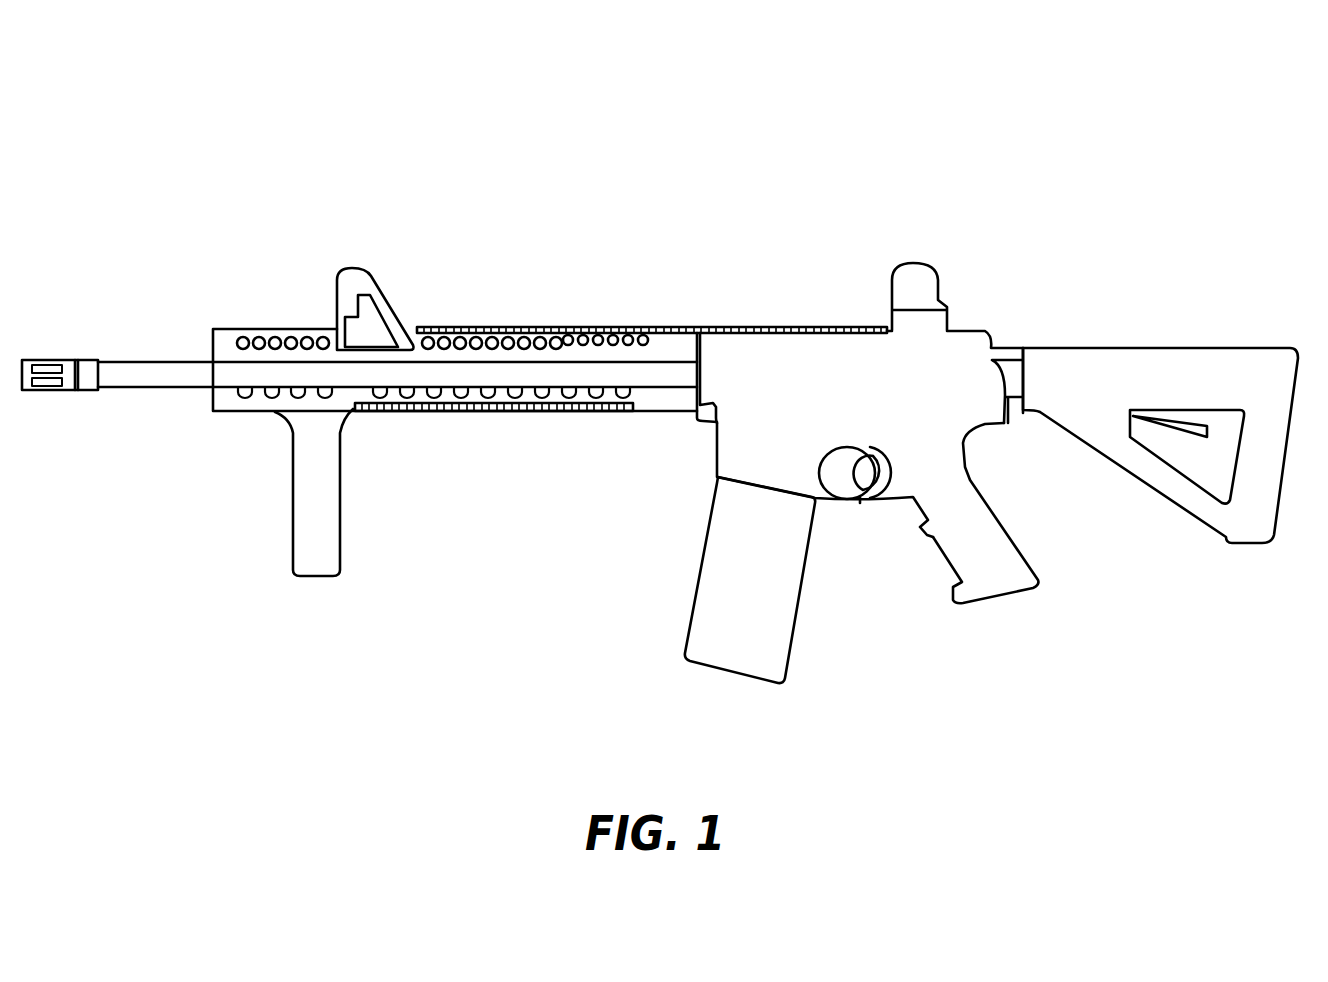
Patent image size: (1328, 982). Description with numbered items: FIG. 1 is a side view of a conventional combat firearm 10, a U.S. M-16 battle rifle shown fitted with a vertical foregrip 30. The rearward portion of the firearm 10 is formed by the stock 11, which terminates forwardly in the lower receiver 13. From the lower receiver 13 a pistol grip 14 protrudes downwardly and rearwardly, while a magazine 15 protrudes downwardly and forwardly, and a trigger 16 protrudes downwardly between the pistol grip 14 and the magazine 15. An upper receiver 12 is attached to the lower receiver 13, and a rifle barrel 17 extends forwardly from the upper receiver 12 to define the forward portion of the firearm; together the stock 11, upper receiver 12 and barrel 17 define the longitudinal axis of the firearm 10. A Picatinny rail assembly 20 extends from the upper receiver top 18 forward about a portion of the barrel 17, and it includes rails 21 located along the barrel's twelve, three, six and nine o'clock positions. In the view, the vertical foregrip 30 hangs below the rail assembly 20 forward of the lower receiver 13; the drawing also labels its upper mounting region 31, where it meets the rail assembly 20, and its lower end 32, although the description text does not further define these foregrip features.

The combat firearm 10 is at (1101, 173).
The stock 11 is at (1207, 348).
The upper receiver 12 is at (840, 387).
The lower receiver 13 is at (732, 445).
The pistol grip 14 is at (1010, 530).
The magazine 15 is at (802, 620).
The trigger 16 is at (860, 503).
The rifle barrel 17 is at (155, 360).
The upper receiver top 18 is at (755, 327).
The Picatinny rail assembly 20 is at (517, 327).
The rails 21 is at (500, 414).
The vertical foregrip 30 is at (308, 495).
The foregrip mounting portion 31 is at (277, 415).
The foregrip bottom end 32 is at (307, 583).